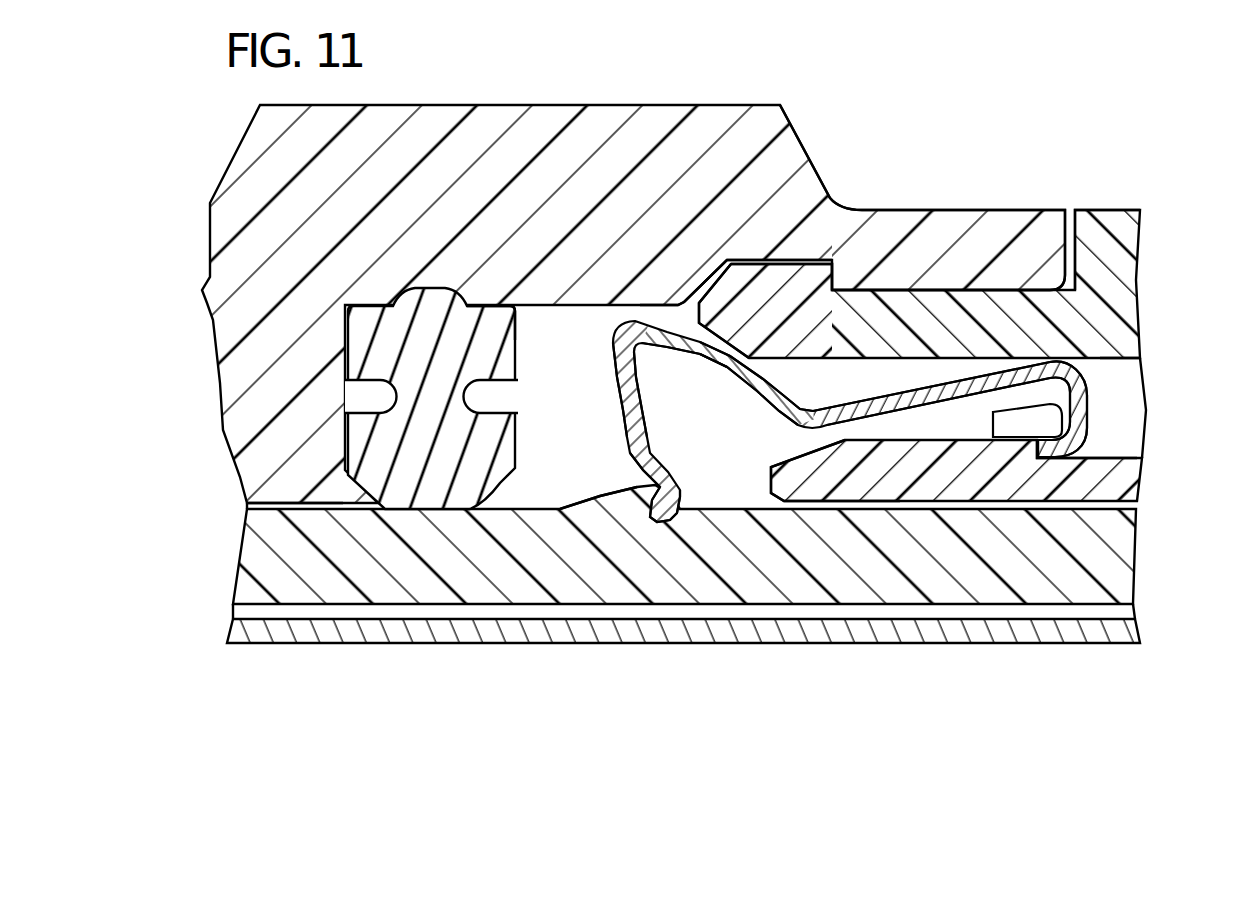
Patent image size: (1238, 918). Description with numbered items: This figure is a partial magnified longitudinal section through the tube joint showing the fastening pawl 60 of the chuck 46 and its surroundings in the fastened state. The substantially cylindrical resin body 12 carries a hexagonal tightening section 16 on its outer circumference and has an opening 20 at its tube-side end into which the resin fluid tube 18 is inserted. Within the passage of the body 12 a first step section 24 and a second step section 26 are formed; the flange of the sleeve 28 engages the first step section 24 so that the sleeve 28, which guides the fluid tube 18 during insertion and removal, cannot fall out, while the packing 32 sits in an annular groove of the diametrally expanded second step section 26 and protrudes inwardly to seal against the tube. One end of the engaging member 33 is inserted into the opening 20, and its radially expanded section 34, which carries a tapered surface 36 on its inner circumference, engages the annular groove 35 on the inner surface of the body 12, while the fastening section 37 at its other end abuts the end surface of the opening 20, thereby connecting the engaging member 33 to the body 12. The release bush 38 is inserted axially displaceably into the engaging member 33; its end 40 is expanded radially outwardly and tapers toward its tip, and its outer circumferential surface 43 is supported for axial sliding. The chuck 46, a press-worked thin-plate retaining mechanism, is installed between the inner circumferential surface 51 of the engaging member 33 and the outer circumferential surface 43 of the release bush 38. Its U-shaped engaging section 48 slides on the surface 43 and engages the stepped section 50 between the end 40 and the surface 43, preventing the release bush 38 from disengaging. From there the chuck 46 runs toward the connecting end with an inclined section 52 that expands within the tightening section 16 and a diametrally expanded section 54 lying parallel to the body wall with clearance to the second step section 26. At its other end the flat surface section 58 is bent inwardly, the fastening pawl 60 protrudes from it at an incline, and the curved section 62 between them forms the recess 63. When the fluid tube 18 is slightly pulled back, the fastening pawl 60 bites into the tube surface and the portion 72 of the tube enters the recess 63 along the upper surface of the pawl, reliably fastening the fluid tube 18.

The body 12 is at (820, 166).
The tightening section 16 is at (548, 125).
The fluid tube 18 is at (1113, 577).
The opening 20 is at (962, 285).
The first step section 24 is at (280, 506).
The second step section 26 is at (523, 323).
The sleeve 28 is at (760, 630).
The packing 32 is at (407, 483).
The engaging member 33 is at (1155, 287).
The expanded section 34 is at (778, 270).
The annular groove 35 is at (772, 262).
The tapered surface 36 is at (675, 320).
The fastening section 37 is at (1098, 230).
The release bush 38 is at (1152, 490).
The end of release bush 40 is at (867, 473).
The outer circumferential surface of release bush 43 is at (1113, 447).
The chuck 46 is at (905, 415).
The engaging section 48 is at (1077, 400).
The stepped section 50 is at (1053, 442).
The inner circumferential surface of engaging member 51 is at (1113, 360).
The inclined section 52 is at (762, 388).
The diametrally expanded section 54 is at (670, 347).
The flat surface section 58 is at (622, 397).
The fastening pawl 60 is at (660, 505).
The curved section 62 is at (666, 488).
The recess 63 is at (661, 488).
The portion of fluid tube 72 is at (648, 498).